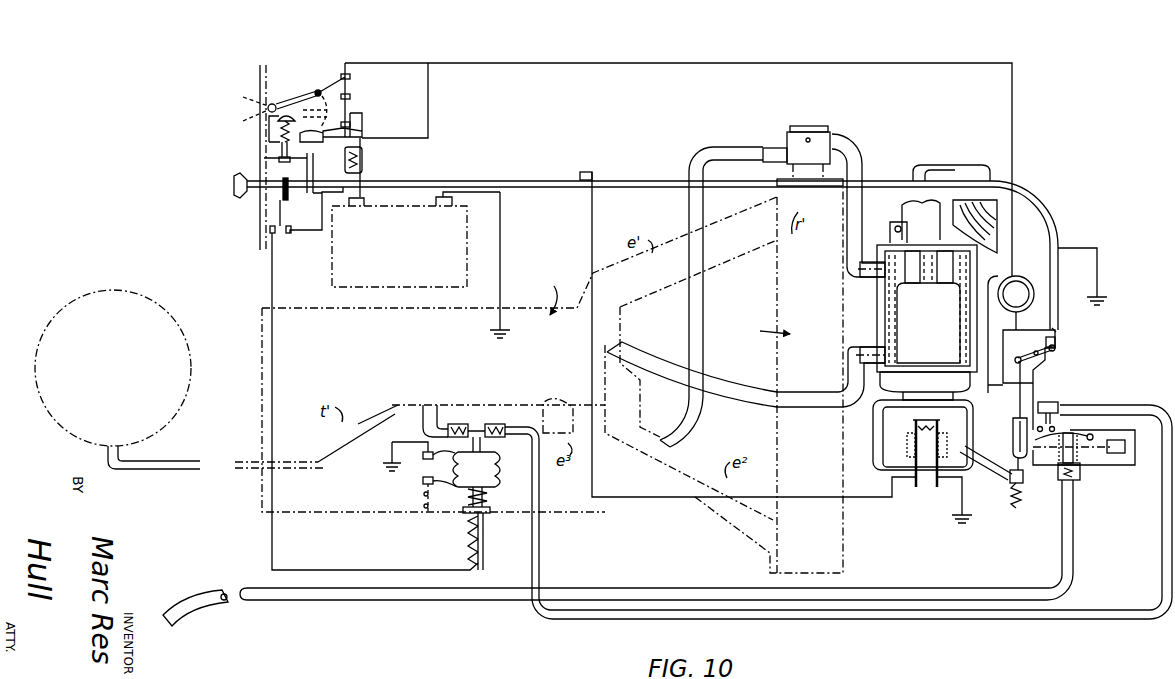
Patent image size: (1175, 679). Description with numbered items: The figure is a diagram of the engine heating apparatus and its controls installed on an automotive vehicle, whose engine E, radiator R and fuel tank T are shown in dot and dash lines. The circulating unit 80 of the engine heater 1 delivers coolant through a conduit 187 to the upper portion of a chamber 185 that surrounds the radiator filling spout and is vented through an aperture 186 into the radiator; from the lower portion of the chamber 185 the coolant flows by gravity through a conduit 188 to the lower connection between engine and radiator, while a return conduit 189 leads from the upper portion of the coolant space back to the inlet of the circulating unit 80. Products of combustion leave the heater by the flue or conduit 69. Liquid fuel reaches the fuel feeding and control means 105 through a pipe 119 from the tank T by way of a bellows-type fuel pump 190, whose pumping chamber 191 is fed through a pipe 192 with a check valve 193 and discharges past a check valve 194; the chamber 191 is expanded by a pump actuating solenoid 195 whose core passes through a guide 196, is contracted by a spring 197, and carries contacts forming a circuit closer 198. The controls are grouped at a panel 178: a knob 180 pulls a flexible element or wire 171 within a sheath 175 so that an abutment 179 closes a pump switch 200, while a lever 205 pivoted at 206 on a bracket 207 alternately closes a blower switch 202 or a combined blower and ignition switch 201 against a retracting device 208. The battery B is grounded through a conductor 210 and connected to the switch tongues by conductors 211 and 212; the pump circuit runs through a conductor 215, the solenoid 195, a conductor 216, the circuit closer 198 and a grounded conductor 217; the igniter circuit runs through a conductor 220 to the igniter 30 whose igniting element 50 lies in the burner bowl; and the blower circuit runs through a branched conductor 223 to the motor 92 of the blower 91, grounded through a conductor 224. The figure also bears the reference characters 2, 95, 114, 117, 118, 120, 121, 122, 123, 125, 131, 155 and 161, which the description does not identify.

The engine heater 1 is at (872, 329).
The crankcase 2 is at (872, 410).
The igniter 30 is at (925, 486).
The igniting element 50 is at (926, 422).
The flue or conduit 69 is at (983, 165).
The circulating unit 80 is at (927, 308).
The air impeller or blower 91 is at (1025, 282).
The motor 92 is at (1019, 310).
The switch housing 95 is at (996, 340).
The fuel feeding and control means 105 is at (1096, 470).
The lever 114 is at (1075, 432).
The solenoid 117 is at (1125, 446).
The fitting 118 is at (1053, 402).
The pipe 119 is at (542, 536).
The valve 120 is at (1079, 480).
The ground connection 121 is at (966, 508).
The pipe 122 is at (1073, 548).
The spring 123 is at (1057, 474).
The axis 125 is at (1069, 456).
The link 131 is at (981, 471).
The terminal 155 is at (1056, 334).
The lever 161 is at (1050, 356).
The flexible element or wire 171 is at (272, 173).
The sheath 175 is at (611, 186).
The panel 178 is at (257, 214).
The abutment 179 is at (291, 199).
The knob 180 is at (233, 186).
The chamber 185 is at (784, 140).
The aperture 186 is at (829, 128).
The conduit 187 is at (863, 165).
The conduit 188 is at (704, 297).
The return conduit 189 is at (743, 392).
The fuel pump 190 is at (498, 466).
The pumping chamber 191 is at (487, 498).
The pipe 192 is at (423, 426).
The check valve 193 is at (457, 424).
The check valve 194 is at (497, 424).
The pump actuating solenoid 195 is at (485, 549).
The guide 196 is at (484, 514).
The spring 197 is at (468, 497).
The circuit closer 198 is at (424, 464).
The pump switch 200 is at (280, 238).
The combined blower and ignition switch 201 is at (363, 126).
The blower switch 202 is at (362, 88).
The lever 205 is at (243, 100).
The pivot 206 is at (276, 101).
The bracket 207 is at (268, 150).
The retracting device 208 is at (278, 127).
The conductor 210 is at (503, 237).
The conductor 211 is at (310, 228).
The conductor 212 is at (362, 158).
The conductor 215 is at (274, 358).
The conductor 216 is at (433, 517).
The conductor 217 is at (392, 452).
The conductor 220 is at (490, 180).
The branched conductor 223 is at (548, 66).
The conductor 224 is at (1098, 268).
The source of electrical energy B is at (416, 239).
The fuel tank T is at (320, 379).
The radiator R is at (763, 330).
The internal combustion engine E is at (547, 294).